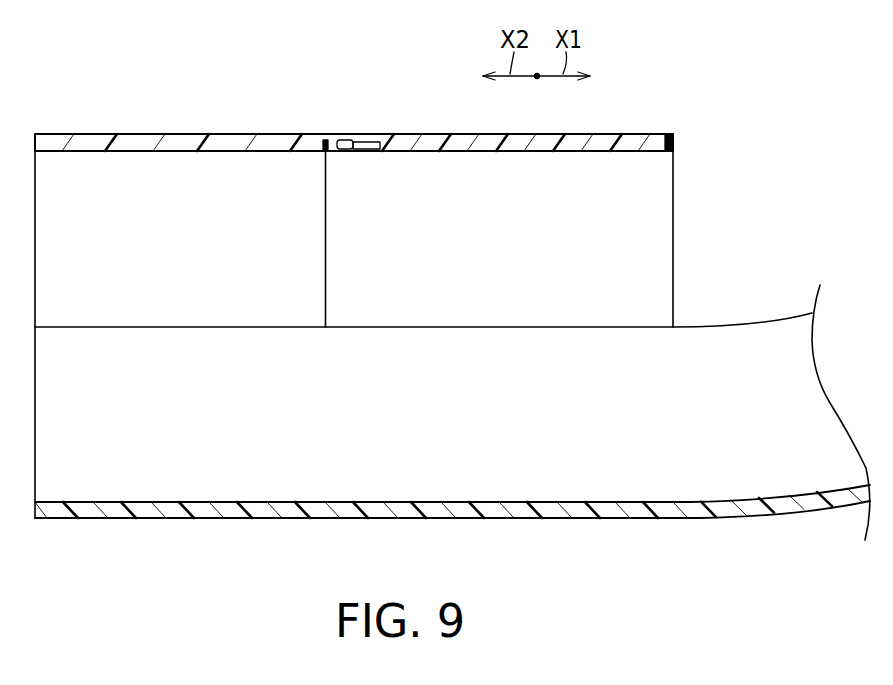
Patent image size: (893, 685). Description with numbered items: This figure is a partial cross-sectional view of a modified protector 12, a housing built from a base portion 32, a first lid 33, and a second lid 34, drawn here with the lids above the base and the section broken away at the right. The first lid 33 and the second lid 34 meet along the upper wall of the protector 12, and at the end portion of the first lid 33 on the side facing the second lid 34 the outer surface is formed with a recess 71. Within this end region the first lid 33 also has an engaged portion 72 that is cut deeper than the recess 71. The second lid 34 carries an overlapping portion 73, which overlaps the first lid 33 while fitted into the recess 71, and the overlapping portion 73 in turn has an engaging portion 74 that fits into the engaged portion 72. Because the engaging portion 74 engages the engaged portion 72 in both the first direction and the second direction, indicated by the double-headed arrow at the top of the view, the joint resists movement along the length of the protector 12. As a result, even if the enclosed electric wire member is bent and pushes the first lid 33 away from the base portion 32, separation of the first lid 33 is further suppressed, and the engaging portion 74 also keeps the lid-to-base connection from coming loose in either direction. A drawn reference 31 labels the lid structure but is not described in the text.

The protector 12 is at (760, 145).
The case 31 is at (92, 132).
The base portion 32 is at (402, 520).
The first lid 33 is at (598, 134).
The second lid 34 is at (175, 133).
The recess 71 is at (344, 140).
The engaged portion 72 is at (374, 140).
The overlapping portion 73 is at (334, 153).
The engaging portion 74 is at (371, 152).